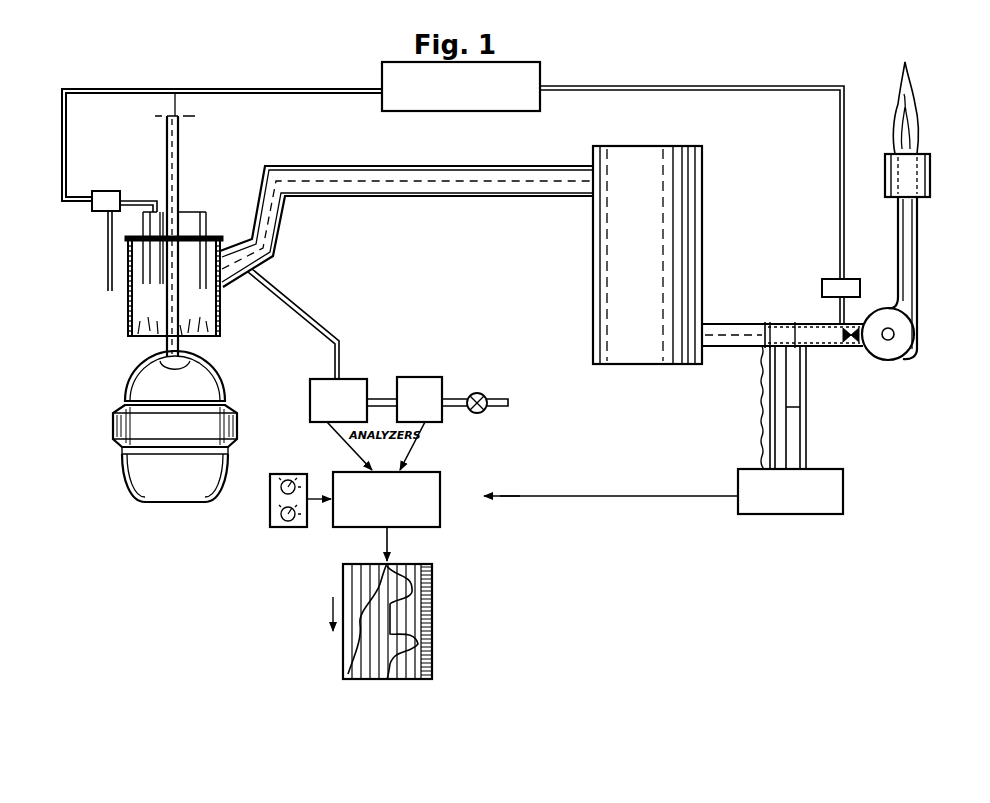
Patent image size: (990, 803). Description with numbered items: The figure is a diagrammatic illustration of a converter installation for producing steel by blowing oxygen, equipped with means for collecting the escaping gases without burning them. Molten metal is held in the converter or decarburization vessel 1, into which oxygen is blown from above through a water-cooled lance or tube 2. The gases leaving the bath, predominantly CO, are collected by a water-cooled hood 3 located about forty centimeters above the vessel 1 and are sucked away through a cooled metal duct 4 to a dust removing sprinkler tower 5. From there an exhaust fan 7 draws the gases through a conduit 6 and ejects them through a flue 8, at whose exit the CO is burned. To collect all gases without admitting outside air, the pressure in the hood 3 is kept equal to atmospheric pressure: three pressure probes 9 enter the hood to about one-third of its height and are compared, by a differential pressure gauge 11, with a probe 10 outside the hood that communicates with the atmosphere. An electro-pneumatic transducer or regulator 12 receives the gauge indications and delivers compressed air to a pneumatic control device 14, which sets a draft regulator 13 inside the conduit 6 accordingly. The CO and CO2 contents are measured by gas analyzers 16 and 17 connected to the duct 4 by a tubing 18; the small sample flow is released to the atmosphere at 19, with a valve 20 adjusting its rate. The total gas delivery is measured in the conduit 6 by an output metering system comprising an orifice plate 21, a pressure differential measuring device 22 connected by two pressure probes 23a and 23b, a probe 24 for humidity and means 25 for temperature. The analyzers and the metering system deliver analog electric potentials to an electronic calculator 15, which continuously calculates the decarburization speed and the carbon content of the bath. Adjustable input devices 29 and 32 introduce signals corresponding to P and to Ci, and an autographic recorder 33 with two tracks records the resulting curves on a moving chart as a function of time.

The converter or decarburization vessel 1 is at (143, 490).
The lance or tube 2 is at (167, 156).
The hood 3 is at (128, 328).
The metal duct 4 is at (417, 176).
The dust removing sprinkler tower 5 is at (680, 215).
The conduit 6 is at (752, 325).
The exhaust fan 7 is at (905, 352).
The flue 8 is at (910, 182).
The pressure probes 9 is at (148, 246).
The probe 10 is at (108, 282).
The differential pressure gauge 11 is at (100, 210).
The electro-pneumatic transducer or regulator 12 is at (540, 108).
The draft regulator 13 is at (851, 347).
The pneumatic control device 14 is at (835, 284).
The electronic calculator 15 is at (440, 485).
The gas analyzer 16 is at (355, 380).
The gas analyzer 17 is at (422, 378).
The tubing 18 is at (302, 320).
The release to atmosphere 19 is at (510, 398).
The valve 20 is at (477, 393).
The orifice plate 21 is at (790, 325).
The pressure differential measuring device 22 is at (843, 495).
The pressure probe 23a is at (800, 410).
The pressure probe 23b is at (806, 458).
The probe 24 is at (770, 438).
The means for measuring the temperature 25 is at (762, 403).
The adjustable input device 29 is at (283, 490).
The adjustable input device 32 is at (289, 523).
The autographic recorder 33 is at (337, 649).